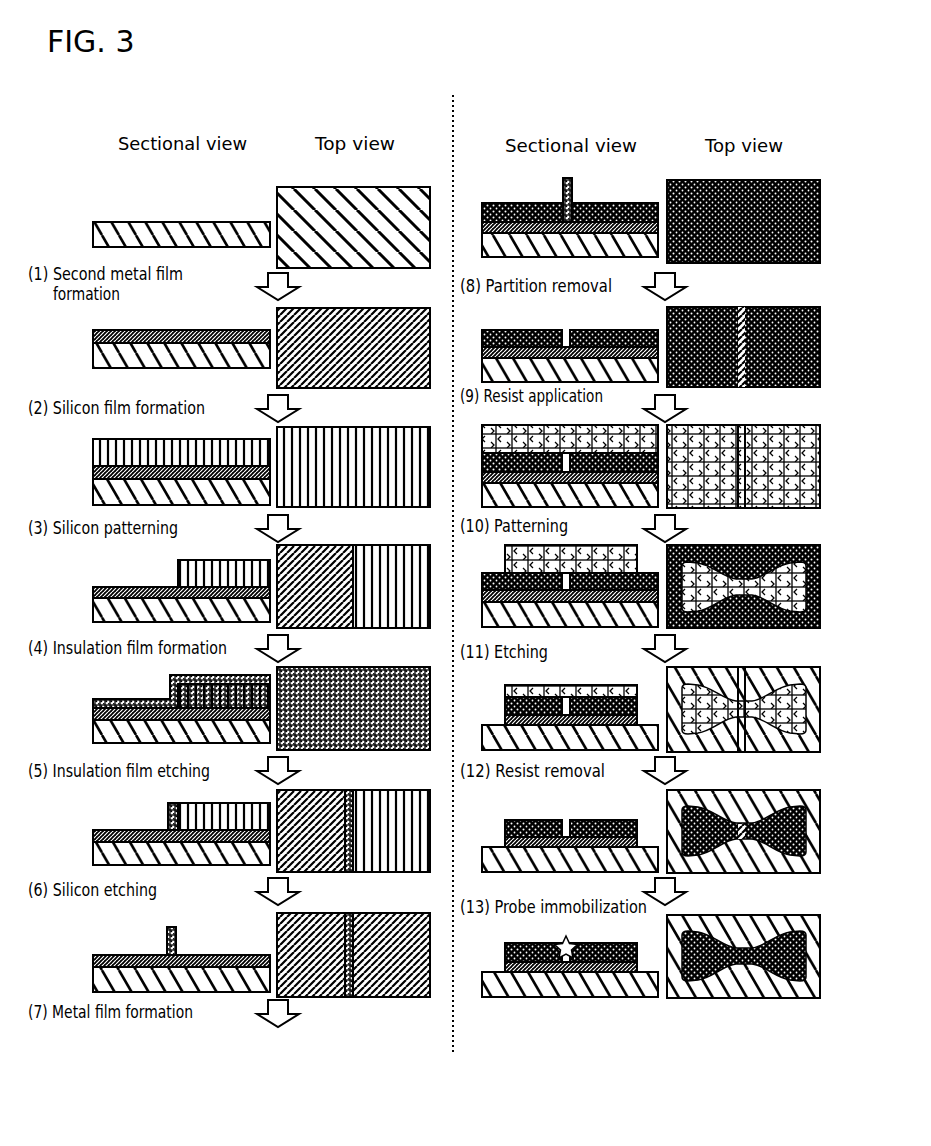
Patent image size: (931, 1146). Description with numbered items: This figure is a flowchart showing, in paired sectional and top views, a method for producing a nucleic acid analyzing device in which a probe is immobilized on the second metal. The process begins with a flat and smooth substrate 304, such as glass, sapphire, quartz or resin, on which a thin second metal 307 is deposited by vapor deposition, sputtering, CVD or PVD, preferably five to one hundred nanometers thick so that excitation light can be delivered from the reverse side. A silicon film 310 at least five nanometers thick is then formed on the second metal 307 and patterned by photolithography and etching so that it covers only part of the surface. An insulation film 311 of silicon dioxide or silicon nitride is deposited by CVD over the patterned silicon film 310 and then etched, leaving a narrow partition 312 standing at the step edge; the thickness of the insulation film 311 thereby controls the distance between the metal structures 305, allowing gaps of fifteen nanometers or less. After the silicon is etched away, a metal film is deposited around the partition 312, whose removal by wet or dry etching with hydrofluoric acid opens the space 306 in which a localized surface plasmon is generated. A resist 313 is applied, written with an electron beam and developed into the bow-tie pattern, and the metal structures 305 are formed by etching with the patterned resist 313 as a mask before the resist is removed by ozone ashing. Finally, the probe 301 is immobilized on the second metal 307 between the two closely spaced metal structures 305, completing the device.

The probe 301 is at (588, 972).
The substrate 304 is at (261, 227).
The metal structures 305 is at (537, 820).
The space in which localized surface plasmon is generated 306 is at (566, 833).
The second metal 307 is at (261, 347).
The silicon film 310 is at (261, 629).
The insulation film 311 is at (170, 681).
The partition 312 is at (167, 934).
The resist 313 is at (563, 432).